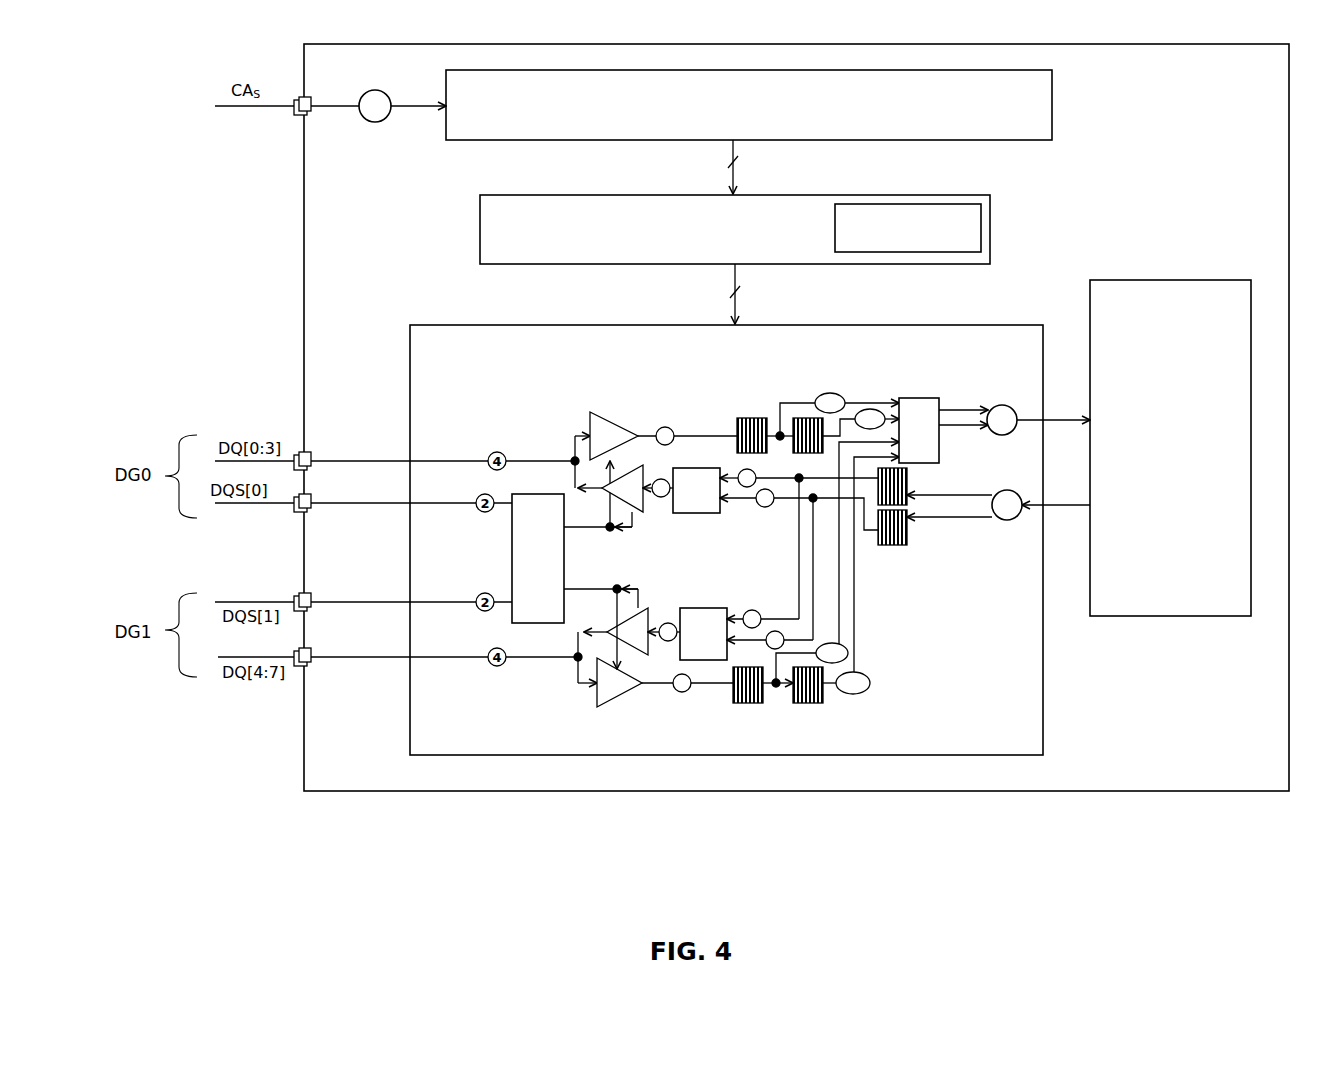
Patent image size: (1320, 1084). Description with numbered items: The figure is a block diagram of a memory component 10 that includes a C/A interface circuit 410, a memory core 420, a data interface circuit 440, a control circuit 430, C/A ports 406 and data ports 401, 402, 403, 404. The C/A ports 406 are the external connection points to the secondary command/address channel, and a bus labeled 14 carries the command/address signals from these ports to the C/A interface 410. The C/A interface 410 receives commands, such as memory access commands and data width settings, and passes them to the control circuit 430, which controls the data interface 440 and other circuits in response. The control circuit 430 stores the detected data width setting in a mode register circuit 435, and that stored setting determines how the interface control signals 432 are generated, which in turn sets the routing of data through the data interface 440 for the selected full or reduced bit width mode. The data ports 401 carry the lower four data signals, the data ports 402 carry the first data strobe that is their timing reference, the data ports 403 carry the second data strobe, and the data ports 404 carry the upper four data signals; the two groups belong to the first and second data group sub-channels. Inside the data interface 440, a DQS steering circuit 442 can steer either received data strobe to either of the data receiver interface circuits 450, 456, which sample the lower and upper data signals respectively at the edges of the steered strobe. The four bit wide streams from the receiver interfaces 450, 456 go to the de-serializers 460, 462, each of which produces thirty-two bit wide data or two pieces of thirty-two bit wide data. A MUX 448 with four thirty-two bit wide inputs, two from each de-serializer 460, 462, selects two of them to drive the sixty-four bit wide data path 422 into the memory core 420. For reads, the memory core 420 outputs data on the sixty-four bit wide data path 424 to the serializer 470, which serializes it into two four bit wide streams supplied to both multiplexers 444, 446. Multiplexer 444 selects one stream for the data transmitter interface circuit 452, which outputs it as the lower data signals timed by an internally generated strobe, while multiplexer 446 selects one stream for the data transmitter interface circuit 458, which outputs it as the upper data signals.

The memory component 10 is at (796, 417).
The command/address links 14 is at (375, 106).
The data ports 401 is at (312, 455).
The data ports 402 is at (312, 512).
The data ports 403 is at (312, 596).
The data ports 404 is at (312, 665).
The C/A ports 406 is at (314, 118).
The C/A interface circuit 410 is at (749, 105).
The memory core 420 is at (1170, 448).
The 64 bit wide data path 422 is at (1068, 408).
The 64 bit wide data path 424 is at (1068, 512).
The control circuit 430 is at (735, 202).
The interface control signals 432 is at (741, 287).
The mode register circuit 435 is at (908, 228).
The data interface circuit 440 is at (726, 540).
The DQS steering circuit 442 is at (575, 558).
The multiplexer 444 is at (696, 490).
The multiplexer 446 is at (746, 569).
The MUX 448 is at (943, 430).
The data receiver interface circuit 450 is at (654, 469).
The data transmitter interface circuit 452 is at (625, 488).
The data receiver interface circuit 456 is at (655, 648).
The data transmitter interface circuit 458 is at (627, 645).
The de-serializer 460 is at (806, 414).
The de-serializer 462 is at (816, 597).
The serializer 470 is at (838, 531).